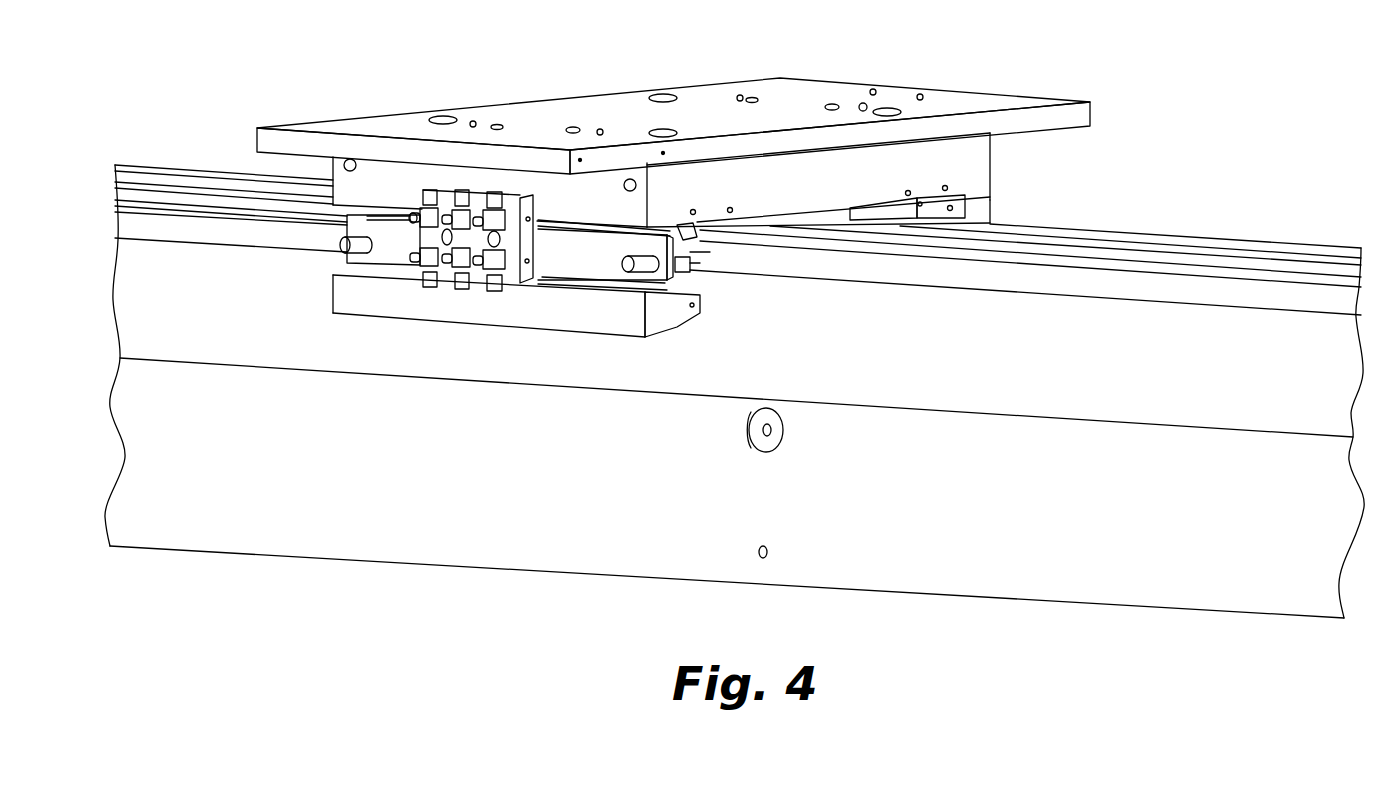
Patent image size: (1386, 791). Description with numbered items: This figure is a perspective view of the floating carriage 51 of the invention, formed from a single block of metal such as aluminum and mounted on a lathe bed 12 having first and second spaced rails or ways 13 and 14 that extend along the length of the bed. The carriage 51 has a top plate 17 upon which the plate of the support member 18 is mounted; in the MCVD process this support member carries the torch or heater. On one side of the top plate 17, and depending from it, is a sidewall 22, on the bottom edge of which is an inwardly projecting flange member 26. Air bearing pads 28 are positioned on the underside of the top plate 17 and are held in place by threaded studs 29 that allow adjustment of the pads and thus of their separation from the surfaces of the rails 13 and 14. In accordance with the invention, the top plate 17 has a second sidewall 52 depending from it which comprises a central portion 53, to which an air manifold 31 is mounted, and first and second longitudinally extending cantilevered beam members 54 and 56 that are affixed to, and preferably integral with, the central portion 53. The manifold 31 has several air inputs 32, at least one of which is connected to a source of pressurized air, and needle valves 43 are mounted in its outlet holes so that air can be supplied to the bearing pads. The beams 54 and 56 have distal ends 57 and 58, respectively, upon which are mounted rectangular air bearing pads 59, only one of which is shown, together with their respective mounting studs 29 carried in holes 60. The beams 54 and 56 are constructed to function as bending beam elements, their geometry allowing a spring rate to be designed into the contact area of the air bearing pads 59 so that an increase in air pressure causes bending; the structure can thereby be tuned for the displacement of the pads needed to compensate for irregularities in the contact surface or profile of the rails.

The lathe bed 12 is at (115, 182).
The first rail 13 is at (153, 167).
The second rail 14 is at (137, 230).
The top plate 17 is at (977, 150).
The support member 18 is at (1063, 101).
The sidewall 22 is at (980, 209).
The flange member 26 is at (667, 325).
The air bearing pads 28 is at (689, 232).
The threaded studs 29 is at (395, 243).
The air manifold 31 is at (534, 203).
The air inputs 32 is at (529, 259).
The needle valves 43 is at (490, 195).
The floating carriage 51 is at (553, 83).
The second sidewall 52 is at (362, 258).
The central portion 53 is at (540, 288).
The first cantilevered beam member 54 is at (698, 312).
The second cantilevered beam member 56 is at (345, 247).
The distal end of first beam 57 is at (697, 250).
The distal end of second beam 58 is at (345, 225).
The air bearing pads 59 is at (692, 268).
The holes 60 is at (367, 242).